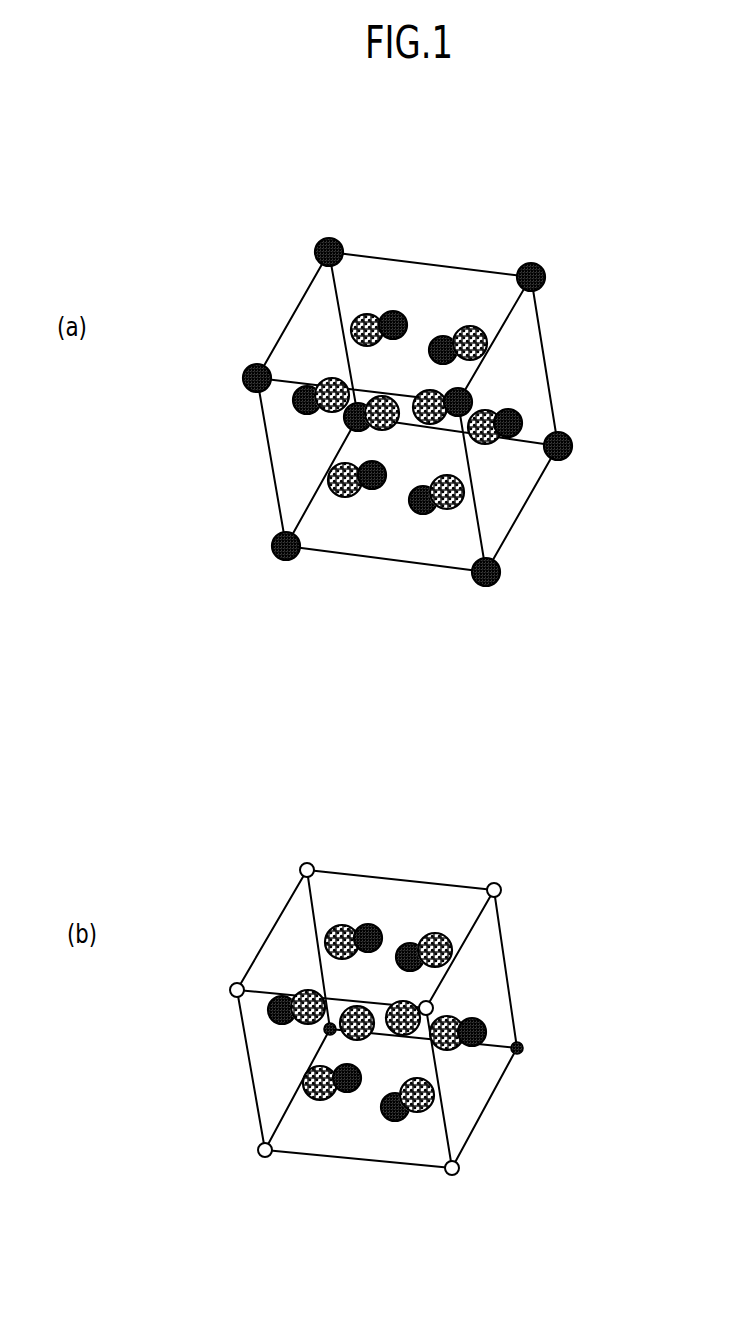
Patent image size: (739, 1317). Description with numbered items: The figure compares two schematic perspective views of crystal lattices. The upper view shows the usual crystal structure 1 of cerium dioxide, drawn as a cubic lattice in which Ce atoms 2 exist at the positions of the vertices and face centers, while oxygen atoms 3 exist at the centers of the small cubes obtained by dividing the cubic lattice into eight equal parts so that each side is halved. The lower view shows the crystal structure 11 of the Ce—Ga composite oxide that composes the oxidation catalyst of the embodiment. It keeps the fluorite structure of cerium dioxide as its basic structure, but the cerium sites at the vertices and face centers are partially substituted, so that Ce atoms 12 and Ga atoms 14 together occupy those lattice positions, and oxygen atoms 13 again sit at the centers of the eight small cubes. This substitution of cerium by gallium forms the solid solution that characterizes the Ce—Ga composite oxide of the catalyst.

The crystal structure of CeO2 1 is at (429, 350).
The Ce atoms 2 is at (393, 311).
The oxygen atoms 3 is at (492, 447).
The crystal structure of Ce—Ga composite oxide 11 is at (406, 947).
The Ce atoms 12 is at (367, 923).
The oxygen atoms 13 is at (437, 957).
The Ga atoms 14 is at (500, 887).